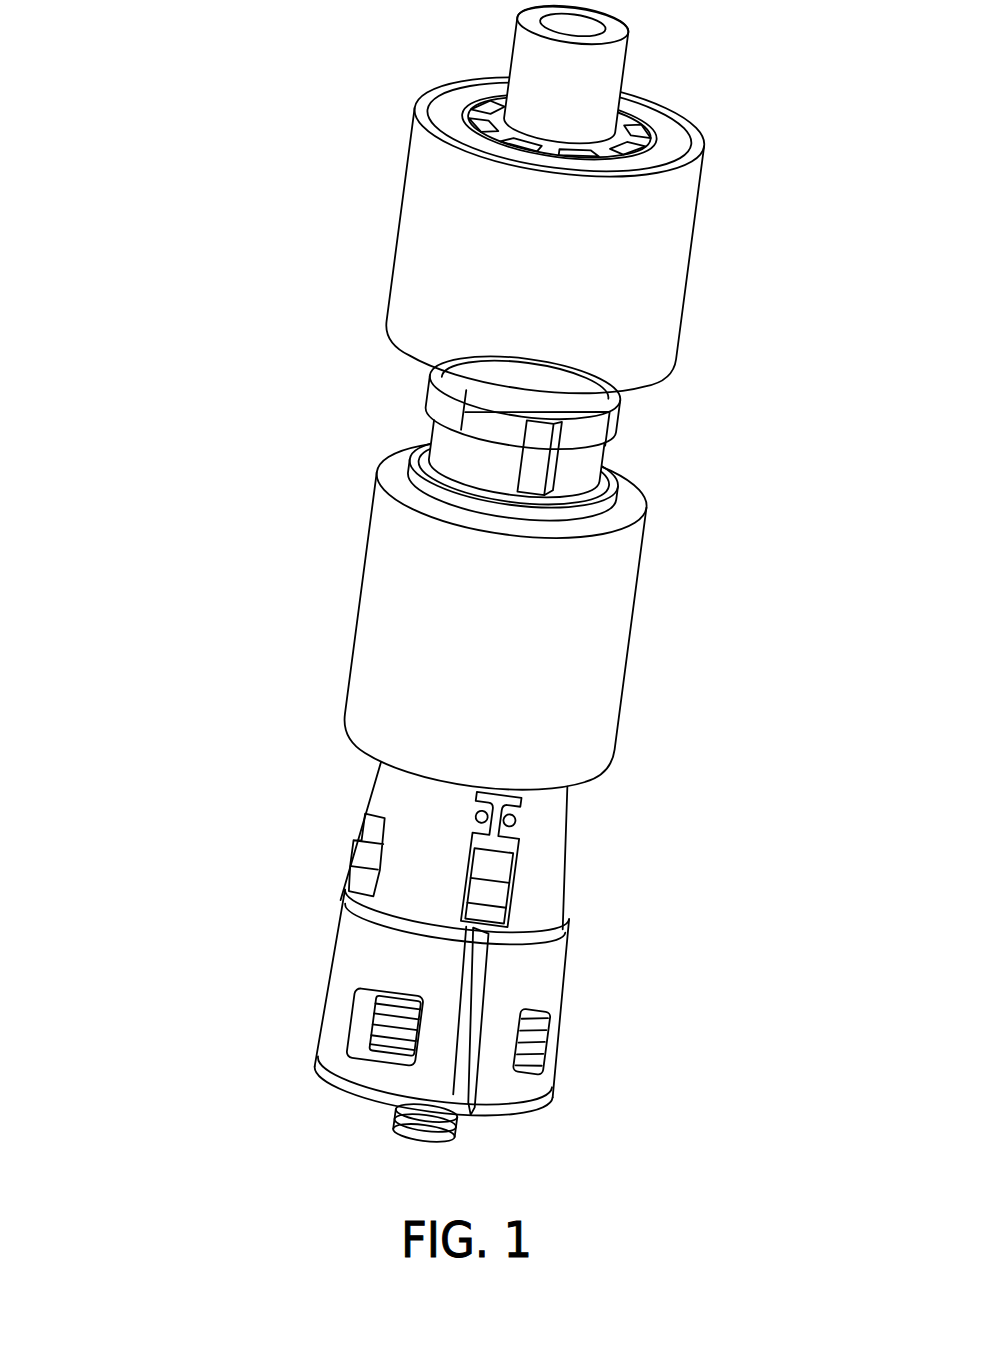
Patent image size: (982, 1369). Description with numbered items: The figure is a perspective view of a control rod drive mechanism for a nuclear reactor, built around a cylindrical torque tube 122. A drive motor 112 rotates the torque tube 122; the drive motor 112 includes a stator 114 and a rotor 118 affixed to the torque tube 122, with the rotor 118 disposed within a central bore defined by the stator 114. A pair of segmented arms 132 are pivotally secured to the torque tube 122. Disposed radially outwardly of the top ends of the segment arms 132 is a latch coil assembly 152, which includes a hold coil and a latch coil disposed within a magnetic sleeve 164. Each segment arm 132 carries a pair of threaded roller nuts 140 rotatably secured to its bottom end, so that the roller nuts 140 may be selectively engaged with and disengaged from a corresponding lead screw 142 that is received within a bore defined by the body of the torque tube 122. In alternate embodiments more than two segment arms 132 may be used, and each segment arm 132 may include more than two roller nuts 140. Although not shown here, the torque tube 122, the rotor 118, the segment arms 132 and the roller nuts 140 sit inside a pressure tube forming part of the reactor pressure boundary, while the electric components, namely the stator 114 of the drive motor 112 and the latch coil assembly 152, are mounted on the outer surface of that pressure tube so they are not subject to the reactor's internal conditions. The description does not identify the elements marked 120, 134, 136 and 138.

The assembly 120 is at (178, 270).
The drive motor 112 is at (392, 170).
The stator 114 is at (692, 238).
The rotor 118 is at (615, 140).
The cylindrical torque tube 122 is at (625, 72).
The coupling member 134 is at (450, 448).
The latch coil assembly 152 is at (325, 624).
The magnetic sleeve 164 is at (628, 658).
The segmented arms 132 is at (340, 804).
The aperture 138 is at (516, 824).
The collar 136 is at (598, 968).
The threaded roller nuts 140 is at (378, 1028).
The lead screw 142 is at (400, 1120).